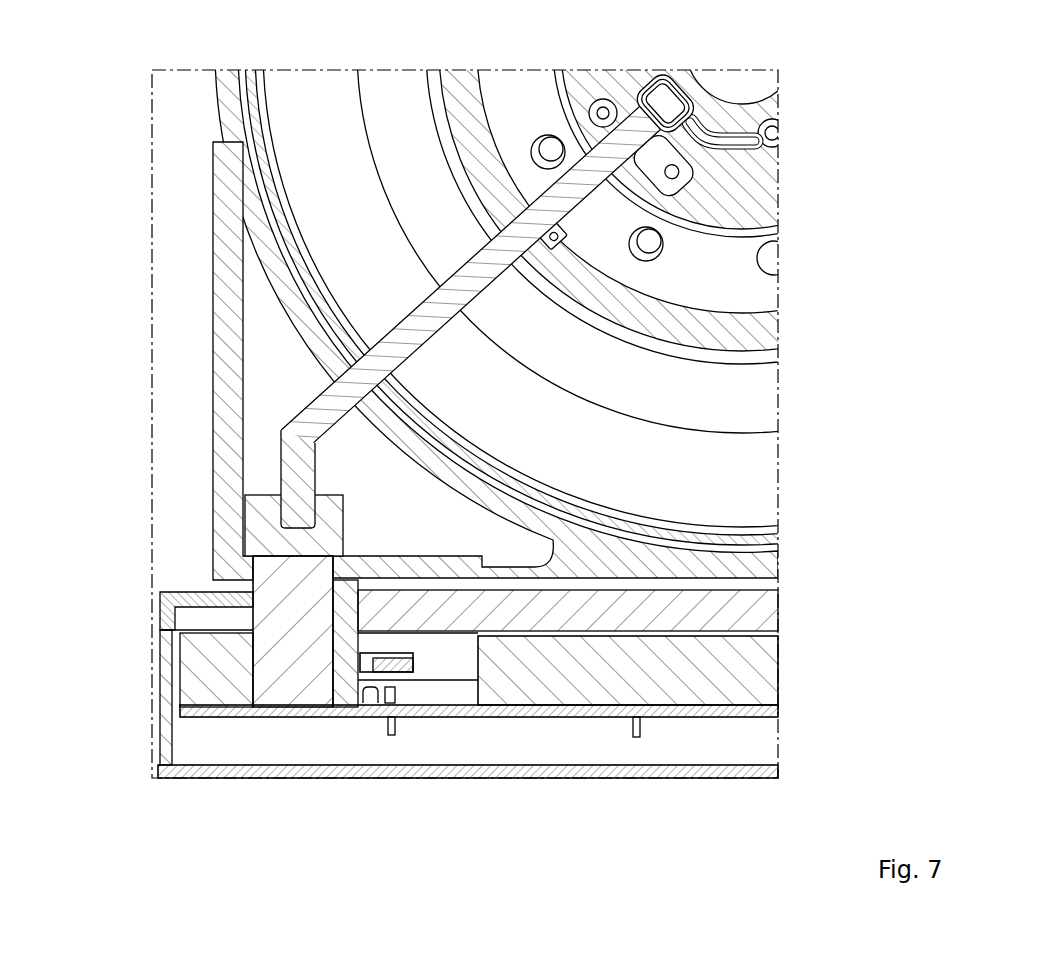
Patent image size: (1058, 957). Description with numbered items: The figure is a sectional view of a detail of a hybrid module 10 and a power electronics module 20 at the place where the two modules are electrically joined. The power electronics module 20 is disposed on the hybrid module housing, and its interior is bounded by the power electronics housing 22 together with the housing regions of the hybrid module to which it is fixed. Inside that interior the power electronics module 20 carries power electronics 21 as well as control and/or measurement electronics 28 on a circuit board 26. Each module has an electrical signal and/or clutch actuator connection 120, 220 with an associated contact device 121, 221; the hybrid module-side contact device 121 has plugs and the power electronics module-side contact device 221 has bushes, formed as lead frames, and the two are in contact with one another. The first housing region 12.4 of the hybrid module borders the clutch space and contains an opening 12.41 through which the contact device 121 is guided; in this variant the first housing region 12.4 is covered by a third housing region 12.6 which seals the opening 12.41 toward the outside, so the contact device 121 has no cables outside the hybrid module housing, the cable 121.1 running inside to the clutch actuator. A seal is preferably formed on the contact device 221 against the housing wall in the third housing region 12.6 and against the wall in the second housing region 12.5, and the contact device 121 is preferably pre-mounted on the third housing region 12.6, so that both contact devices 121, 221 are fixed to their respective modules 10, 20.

The hybrid module 10 is at (128, 95).
The first housing region 12.4 is at (328, 360).
The opening 12.41 is at (345, 375).
The second housing region 12.5 is at (215, 600).
The third housing region 12.6 is at (222, 272).
The electrical signal and/or clutch actuator connection 120 is at (192, 504).
The hybrid module-side contact device 121 is at (250, 512).
The cable 121.1 is at (287, 465).
The power electronics module 20 is at (103, 803).
The electrical signal and/or clutch actuator connection 220 is at (175, 631).
The power electronics module-side contact device 221 is at (273, 692).
The circuit board 26 is at (212, 717).
The power electronics 21 is at (479, 781).
The control and/or measurement electronics 28 is at (479, 711).
The power electronics housing 22 is at (507, 774).